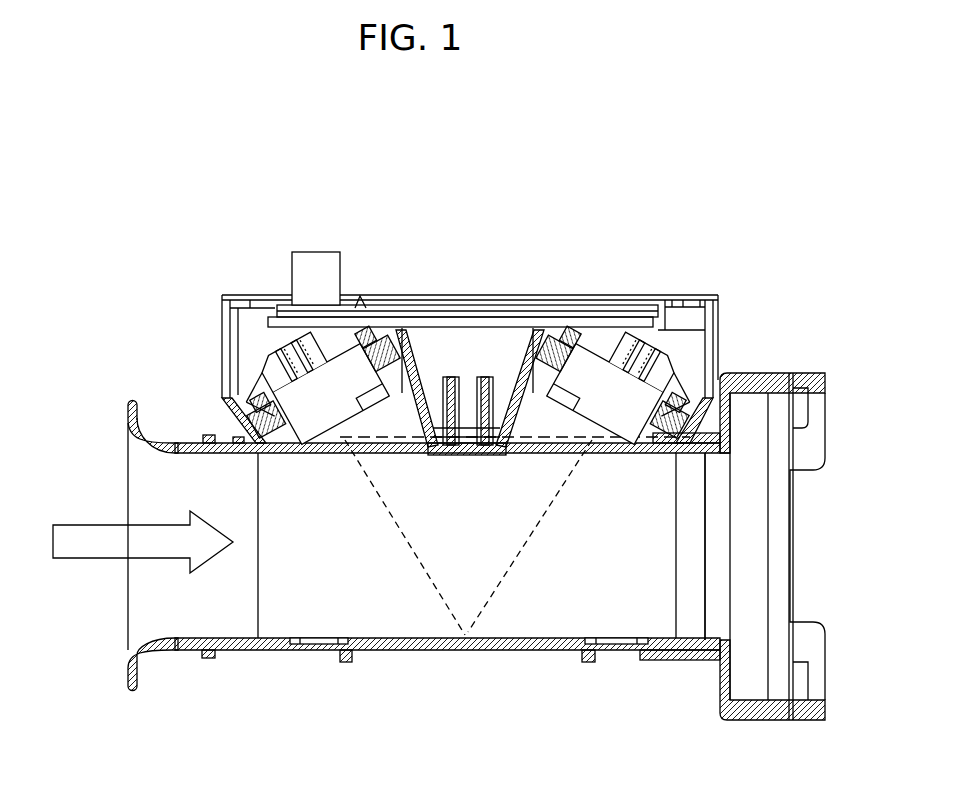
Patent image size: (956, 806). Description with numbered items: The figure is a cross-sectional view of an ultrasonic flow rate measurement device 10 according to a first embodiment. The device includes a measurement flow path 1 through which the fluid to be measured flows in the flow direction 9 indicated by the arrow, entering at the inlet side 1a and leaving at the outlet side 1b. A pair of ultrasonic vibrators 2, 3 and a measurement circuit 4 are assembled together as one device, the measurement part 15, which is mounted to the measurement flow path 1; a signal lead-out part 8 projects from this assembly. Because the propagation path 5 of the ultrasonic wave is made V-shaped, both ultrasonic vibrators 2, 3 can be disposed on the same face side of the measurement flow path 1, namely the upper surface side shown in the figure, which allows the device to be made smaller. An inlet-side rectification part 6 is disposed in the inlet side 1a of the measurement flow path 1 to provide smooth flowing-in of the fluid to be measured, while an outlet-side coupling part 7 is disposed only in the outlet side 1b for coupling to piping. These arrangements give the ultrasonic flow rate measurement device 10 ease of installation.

The measurement flow path 1 is at (367, 625).
The inlet side 1a is at (225, 625).
The outlet side 1b is at (688, 630).
The ultrasonic vibrator 2 is at (310, 383).
The ultrasonic vibrator 3 is at (623, 388).
The measurement circuit 4 is at (497, 312).
The propagation path 5 is at (483, 602).
The inlet-side rectification part 6 is at (132, 690).
The outlet-side coupling part 7 is at (782, 720).
The signal lead-out part 8 is at (312, 250).
The flow direction 9 is at (88, 537).
The ultrasonic flow rate measurement device 10 is at (613, 238).
The measurement part 15 is at (713, 368).